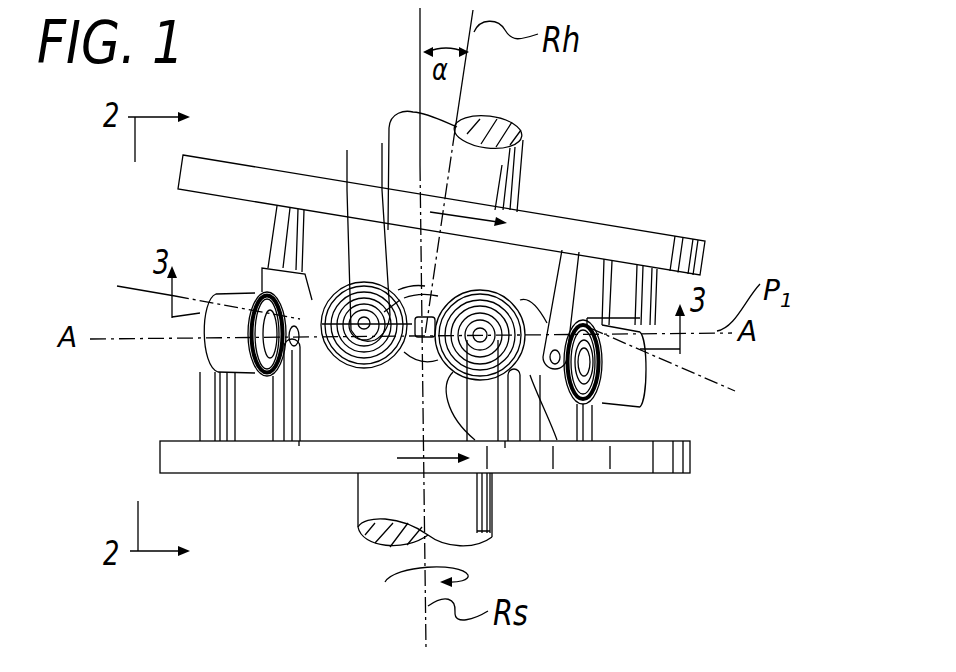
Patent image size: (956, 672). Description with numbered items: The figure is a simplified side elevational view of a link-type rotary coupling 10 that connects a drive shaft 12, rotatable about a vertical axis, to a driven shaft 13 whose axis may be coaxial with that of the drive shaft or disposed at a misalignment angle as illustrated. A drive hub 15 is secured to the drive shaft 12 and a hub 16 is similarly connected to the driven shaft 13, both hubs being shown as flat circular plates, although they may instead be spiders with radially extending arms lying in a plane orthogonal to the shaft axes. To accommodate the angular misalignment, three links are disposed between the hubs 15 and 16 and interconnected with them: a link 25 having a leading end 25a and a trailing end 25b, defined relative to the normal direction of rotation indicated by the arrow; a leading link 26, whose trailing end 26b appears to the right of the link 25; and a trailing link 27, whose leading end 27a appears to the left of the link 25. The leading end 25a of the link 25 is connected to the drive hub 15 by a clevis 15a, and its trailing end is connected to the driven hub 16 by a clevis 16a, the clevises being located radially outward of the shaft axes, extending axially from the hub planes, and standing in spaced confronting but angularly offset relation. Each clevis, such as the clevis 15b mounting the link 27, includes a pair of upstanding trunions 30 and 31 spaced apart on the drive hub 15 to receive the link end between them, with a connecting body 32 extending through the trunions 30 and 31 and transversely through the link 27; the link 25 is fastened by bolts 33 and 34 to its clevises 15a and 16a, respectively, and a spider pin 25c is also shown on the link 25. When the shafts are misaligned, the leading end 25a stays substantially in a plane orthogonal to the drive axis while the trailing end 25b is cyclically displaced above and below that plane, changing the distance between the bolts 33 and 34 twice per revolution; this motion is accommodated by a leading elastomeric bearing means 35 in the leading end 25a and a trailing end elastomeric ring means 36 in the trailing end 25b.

The coupling 10 is at (697, 193).
The drive shaft 12 is at (493, 540).
The driven shaft 13 is at (503, 165).
The hub 15 is at (682, 473).
The clevis 15a is at (505, 448).
The clevis 15b is at (298, 445).
The hub 16 is at (703, 249).
The clevis 16a is at (388, 185).
The link 25 is at (417, 372).
The leading end 25a is at (518, 448).
The trailing end 25b is at (344, 368).
The spider pin 25c is at (398, 290).
The leading link 26 is at (617, 258).
The trailing end 26b is at (640, 407).
The trailing link 27 is at (268, 270).
The leading end 27a is at (220, 347).
The trunion 30 is at (182, 447).
The trunion 31 is at (282, 428).
The connecting body 32 is at (290, 338).
The bolt 33 is at (523, 273).
The bolt 34 is at (384, 312).
The leading elastomeric bearing means 35 is at (448, 537).
The trailing end elastomeric ring means 36 is at (350, 175).